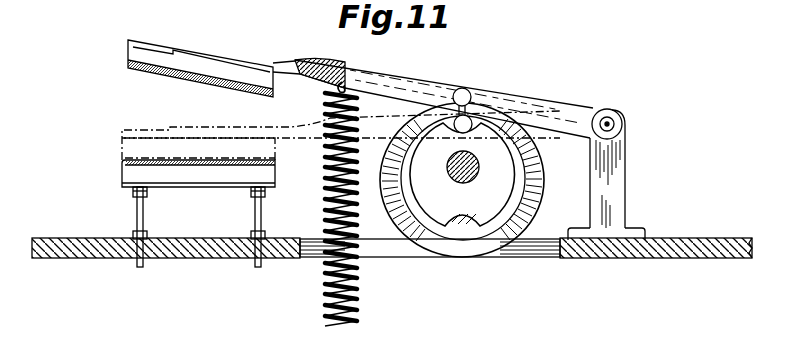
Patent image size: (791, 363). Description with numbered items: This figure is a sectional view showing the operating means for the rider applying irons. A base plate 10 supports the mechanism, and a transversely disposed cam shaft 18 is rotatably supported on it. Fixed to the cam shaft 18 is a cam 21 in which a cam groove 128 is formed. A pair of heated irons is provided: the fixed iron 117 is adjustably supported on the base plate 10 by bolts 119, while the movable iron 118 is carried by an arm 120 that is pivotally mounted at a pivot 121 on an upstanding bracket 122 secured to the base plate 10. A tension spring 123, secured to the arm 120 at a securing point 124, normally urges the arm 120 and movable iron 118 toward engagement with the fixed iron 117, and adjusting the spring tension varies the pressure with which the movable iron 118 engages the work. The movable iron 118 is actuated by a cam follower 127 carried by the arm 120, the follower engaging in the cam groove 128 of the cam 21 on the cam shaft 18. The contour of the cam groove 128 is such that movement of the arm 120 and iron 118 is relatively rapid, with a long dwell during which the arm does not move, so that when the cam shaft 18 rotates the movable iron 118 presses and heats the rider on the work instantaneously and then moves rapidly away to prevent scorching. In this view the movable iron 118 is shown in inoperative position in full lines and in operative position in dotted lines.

The base plate 10 is at (98, 256).
The cam shaft 18 is at (448, 170).
The cam 21 is at (542, 196).
The fixed iron 117 is at (126, 173).
The movable iron 118 is at (128, 52).
The bolts 119 is at (136, 210).
The arm 120 is at (378, 72).
The pivot 121 is at (613, 111).
The upstanding bracket 122 is at (626, 176).
The tension spring 123 is at (360, 299).
The spring securing point 124 is at (346, 62).
The cam follower 127 is at (462, 88).
The cam groove 128 is at (538, 177).